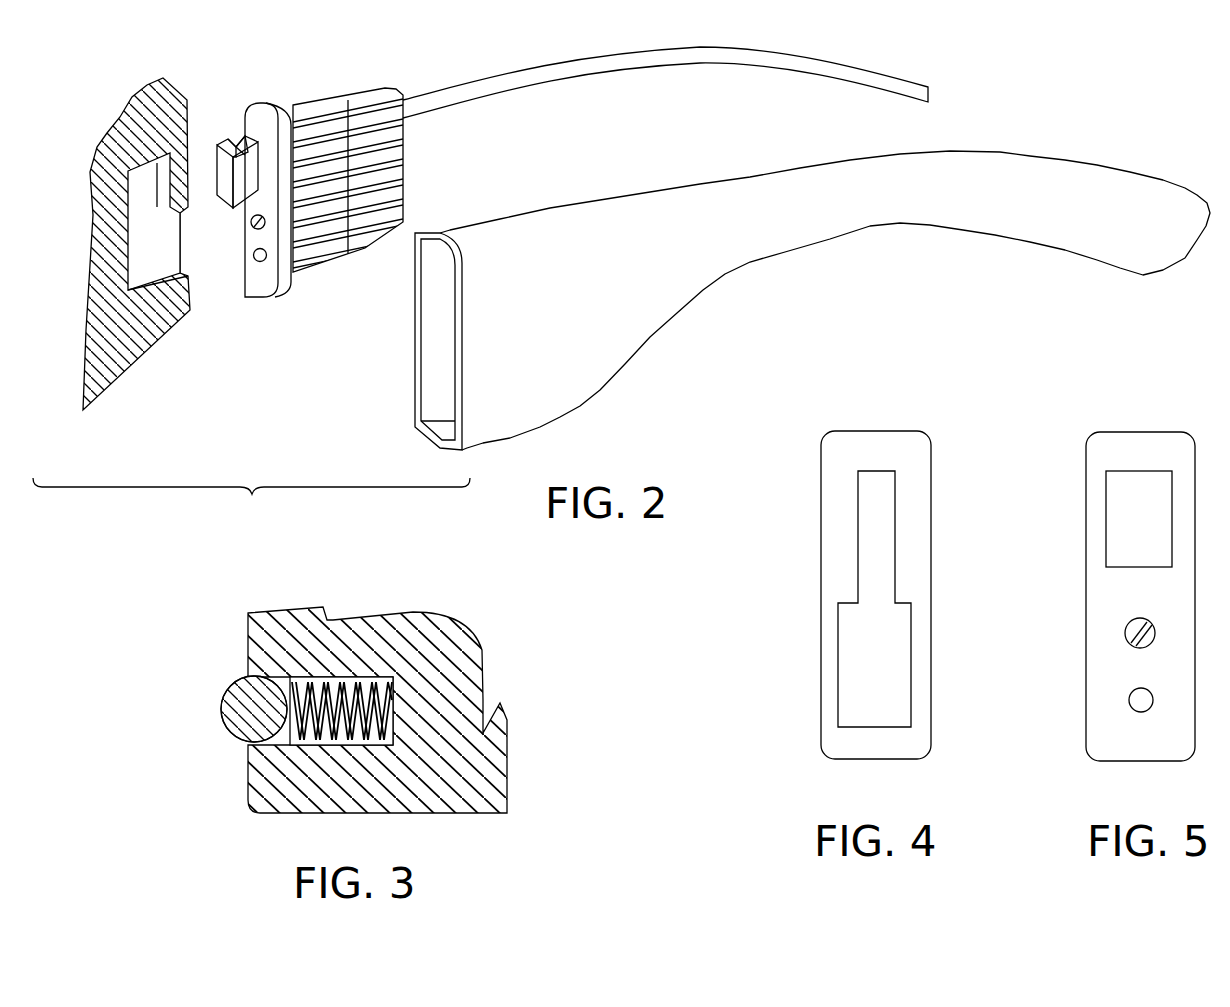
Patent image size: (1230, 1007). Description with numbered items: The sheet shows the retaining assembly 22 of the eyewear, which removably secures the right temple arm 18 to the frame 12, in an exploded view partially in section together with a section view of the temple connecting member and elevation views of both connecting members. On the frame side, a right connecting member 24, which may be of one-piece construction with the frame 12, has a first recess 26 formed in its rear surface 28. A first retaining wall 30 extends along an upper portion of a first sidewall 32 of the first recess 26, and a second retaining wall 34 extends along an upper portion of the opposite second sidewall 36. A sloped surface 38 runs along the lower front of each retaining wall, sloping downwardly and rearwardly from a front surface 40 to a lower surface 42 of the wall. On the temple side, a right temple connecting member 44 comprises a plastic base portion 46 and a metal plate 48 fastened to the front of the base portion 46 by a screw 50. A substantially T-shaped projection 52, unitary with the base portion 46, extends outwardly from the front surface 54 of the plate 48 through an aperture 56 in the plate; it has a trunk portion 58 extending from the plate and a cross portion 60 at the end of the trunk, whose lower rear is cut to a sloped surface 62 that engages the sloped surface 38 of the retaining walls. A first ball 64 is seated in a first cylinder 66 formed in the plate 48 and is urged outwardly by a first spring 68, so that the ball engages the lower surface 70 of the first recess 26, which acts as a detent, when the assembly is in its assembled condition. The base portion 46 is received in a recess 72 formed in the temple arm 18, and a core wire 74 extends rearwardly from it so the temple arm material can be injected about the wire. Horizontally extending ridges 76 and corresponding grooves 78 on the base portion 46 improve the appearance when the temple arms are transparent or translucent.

In FIG. 2, the frame 12 is at (130, 238).
In FIG. 4, the frame 12 is at (875, 613).
In FIG. 2, the right temple arm 18 is at (812, 300).
In FIG. 2, the retaining assembly 22 is at (230, 403).
In FIG. 2, the right connecting member 24 is at (167, 346).
In FIG. 4, the right connecting member 24 is at (796, 652).
In FIG. 2, the first recess 26 is at (177, 310).
In FIG. 4, the first recess 26 is at (875, 714).
In FIG. 2, the rear surface 28 is at (165, 82).
In FIG. 4, the rear surface 28 is at (833, 740).
In FIG. 2, the first retaining wall 30 is at (177, 165).
In FIG. 4, the first retaining wall 30 is at (916, 556).
In FIG. 4, the first sidewall 32 is at (912, 624).
In FIG. 4, the second retaining wall 34 is at (835, 563).
In FIG. 4, the second sidewall 36 is at (840, 680).
In FIG. 2, the sloped surface 38 is at (167, 198).
In FIG. 2, the front surface 40 is at (160, 176).
In FIG. 2, the lower surface 42 is at (178, 237).
In FIG. 2, the right temple connecting member 44 is at (386, 67).
In FIG. 5, the right temple connecting member 44 is at (1070, 718).
In FIG. 2, the base portion 46 is at (375, 165).
In FIG. 2, the plate 48 is at (267, 212).
In FIG. 3, the plate 48 is at (348, 715).
In FIG. 5, the plate 48 is at (1111, 619).
In FIG. 2, the screw 50 is at (267, 228).
In FIG. 5, the screw 50 is at (1127, 627).
In FIG. 2, the T-shaped projection 52 is at (224, 160).
In FIG. 5, the T-shaped projection 52 is at (1105, 488).
In FIG. 2, the front surface 54 is at (263, 298).
In FIG. 5, the front surface 54 is at (1167, 752).
In FIG. 2, the aperture 56 is at (316, 105).
In FIG. 2, the trunk portion 58 is at (268, 108).
In FIG. 2, the cross portion 60 is at (236, 138).
In FIG. 5, the cross portion 60 is at (1115, 543).
In FIG. 2, the sloped surface 62 is at (250, 200).
In FIG. 2, the first ball 64 is at (257, 261).
In FIG. 3, the first ball 64 is at (222, 720).
In FIG. 5, the first ball 64 is at (1140, 713).
In FIG. 3, the first cylinder 66 is at (287, 745).
In FIG. 3, the first spring 68 is at (350, 677).
In FIG. 2, the lower surface 70 is at (178, 263).
In FIG. 4, the lower surface 70 is at (838, 722).
In FIG. 2, the recess 72 is at (447, 378).
In FIG. 2, the core wire 74 is at (800, 65).
In FIG. 2, the ridges 76 is at (398, 175).
In FIG. 2, the grooves 78 is at (394, 208).